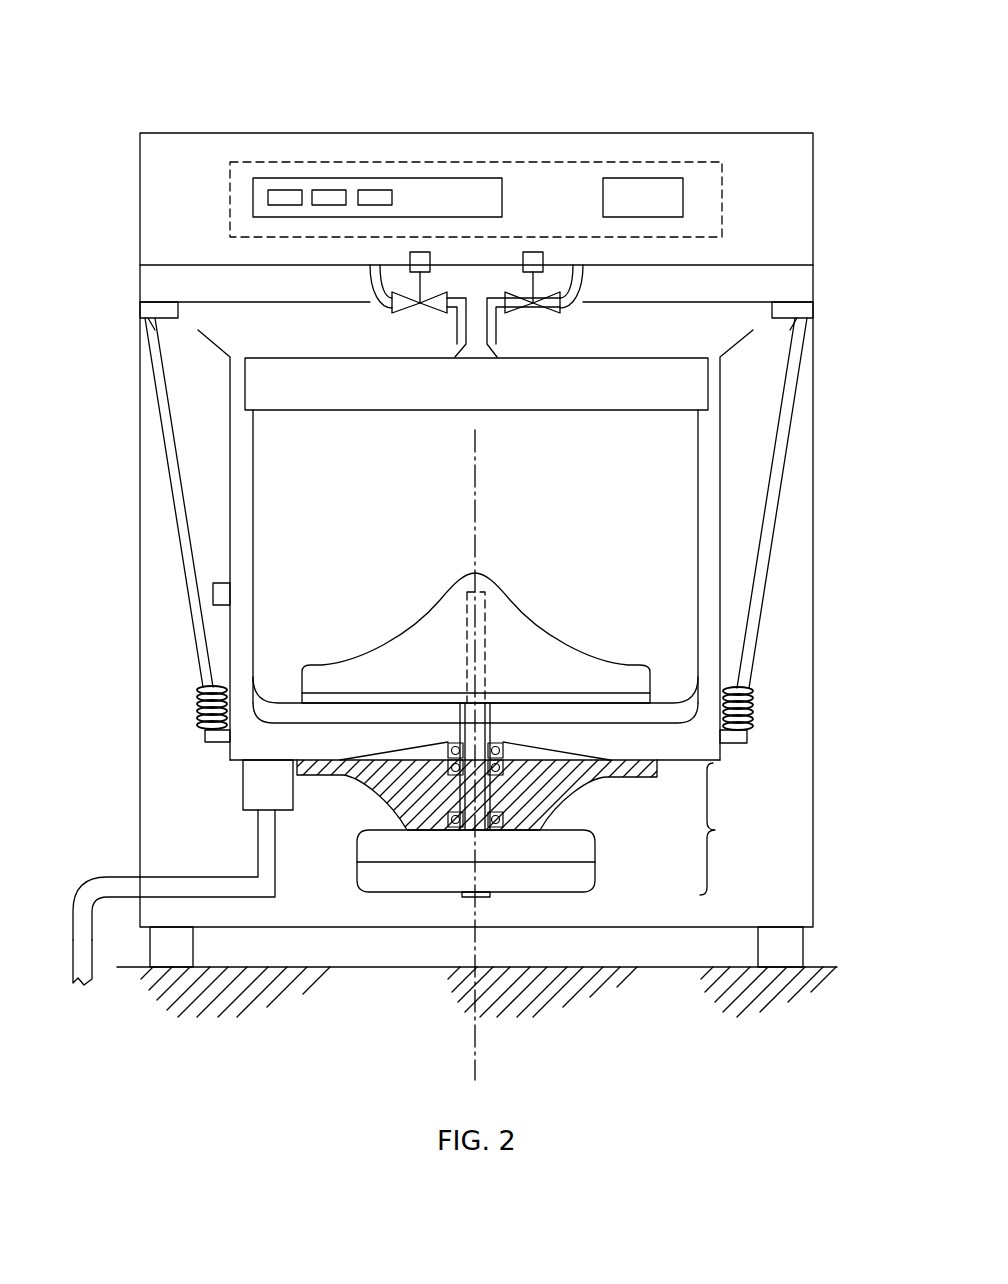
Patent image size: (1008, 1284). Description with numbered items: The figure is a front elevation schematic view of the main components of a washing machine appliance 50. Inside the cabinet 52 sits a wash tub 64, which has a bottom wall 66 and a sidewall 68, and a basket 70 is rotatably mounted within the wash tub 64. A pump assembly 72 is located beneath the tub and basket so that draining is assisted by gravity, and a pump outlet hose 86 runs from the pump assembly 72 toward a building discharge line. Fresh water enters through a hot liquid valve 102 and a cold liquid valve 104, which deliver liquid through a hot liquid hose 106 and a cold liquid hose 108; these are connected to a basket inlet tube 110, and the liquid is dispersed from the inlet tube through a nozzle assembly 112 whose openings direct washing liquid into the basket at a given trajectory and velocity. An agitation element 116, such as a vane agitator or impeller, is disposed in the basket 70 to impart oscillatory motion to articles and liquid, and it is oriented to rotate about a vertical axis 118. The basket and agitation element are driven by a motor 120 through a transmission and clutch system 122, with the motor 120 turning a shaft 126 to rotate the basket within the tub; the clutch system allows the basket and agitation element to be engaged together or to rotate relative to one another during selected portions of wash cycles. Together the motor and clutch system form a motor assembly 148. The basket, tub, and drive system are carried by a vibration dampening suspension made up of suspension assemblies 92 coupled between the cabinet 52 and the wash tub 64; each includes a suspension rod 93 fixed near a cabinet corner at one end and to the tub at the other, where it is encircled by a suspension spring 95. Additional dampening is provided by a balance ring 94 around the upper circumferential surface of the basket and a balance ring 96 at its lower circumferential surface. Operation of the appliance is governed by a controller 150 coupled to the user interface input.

The washing machine appliance 50 is at (176, 62).
The cabinet 52 is at (814, 490).
The wash tub 64 is at (230, 517).
The bottom wall 66 is at (243, 765).
The sidewall 68 is at (722, 553).
The basket 70 is at (697, 603).
The pump assembly 72 is at (243, 810).
The pump outlet hose 86 is at (73, 930).
The suspension assembly 92 is at (162, 412).
The suspension rod 93 is at (173, 480).
The balance ring 94 is at (296, 377).
The suspension spring 95 is at (198, 700).
The balance ring 96 is at (688, 712).
The hot liquid valve 102 is at (419, 252).
The cold liquid valve 104 is at (537, 252).
The hot liquid hose 106 is at (372, 276).
The cold liquid hose 108 is at (583, 280).
The basket inlet tube 110 is at (495, 352).
The nozzle assembly 112 is at (457, 352).
The agitation element 116 is at (515, 603).
The vertical axis 118 is at (475, 510).
The motor 120 is at (583, 878).
The transmission and clutch system 122 is at (580, 845).
The shaft 126 is at (472, 793).
The motor assembly 148 is at (742, 829).
The controller 150 is at (723, 180).